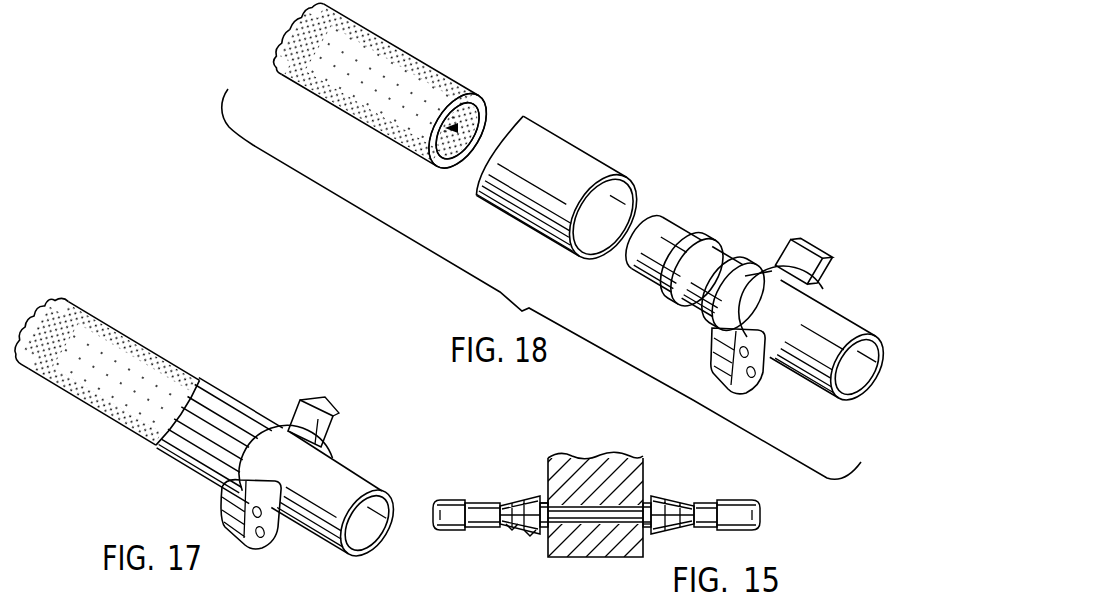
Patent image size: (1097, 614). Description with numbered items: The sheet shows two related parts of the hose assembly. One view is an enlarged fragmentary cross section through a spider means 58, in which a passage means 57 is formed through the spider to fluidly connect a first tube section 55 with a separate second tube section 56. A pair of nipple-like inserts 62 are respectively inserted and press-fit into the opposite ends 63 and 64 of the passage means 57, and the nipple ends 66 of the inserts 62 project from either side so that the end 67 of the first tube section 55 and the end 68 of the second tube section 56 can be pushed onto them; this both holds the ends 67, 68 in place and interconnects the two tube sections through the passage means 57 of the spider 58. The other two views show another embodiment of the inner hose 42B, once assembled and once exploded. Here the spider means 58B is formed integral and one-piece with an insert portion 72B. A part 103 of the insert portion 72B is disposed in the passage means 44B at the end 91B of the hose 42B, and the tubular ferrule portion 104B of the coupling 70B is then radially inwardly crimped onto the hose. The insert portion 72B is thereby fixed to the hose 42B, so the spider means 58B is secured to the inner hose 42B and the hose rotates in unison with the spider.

In FIG. 18, the inner hose 42B is at (425, 66).
In FIG. 17, the inner hose 42B is at (113, 323).
In FIG. 18, the end of the hose 91B is at (463, 95).
In FIG. 18, the passage means 44B is at (457, 128).
In FIG. 18, the tubular ferrule portion 104B is at (586, 152).
In FIG. 18, the part of the insert portion 103 is at (680, 222).
In FIG. 17, the part of the insert portion 103 is at (209, 468).
In FIG. 18, the spider means 58B is at (766, 284).
In FIG. 18, the insert portion 72B is at (838, 328).
In FIG. 17, the insert portion 72B is at (343, 478).
In FIG. 17, the coupling 70B is at (226, 390).
In FIG. 17, the spider means 58 is at (278, 440).
In FIG. 15, the spider means 58 is at (583, 467).
In FIG. 15, the second tube section 56 is at (447, 500).
In FIG. 15, the nipple ends 66 is at (502, 507).
In FIG. 15, the end of the passage means 63 is at (550, 500).
In FIG. 15, the nipple-like inserts 62 is at (646, 495).
In FIG. 15, the end of the first tube section 67 is at (678, 500).
In FIG. 15, the first tube section 55 is at (748, 513).
In FIG. 15, the end of the second tube section 68 is at (528, 533).
In FIG. 15, the passage means 57 is at (600, 515).
In FIG. 15, the end of the passage means 64 is at (633, 532).